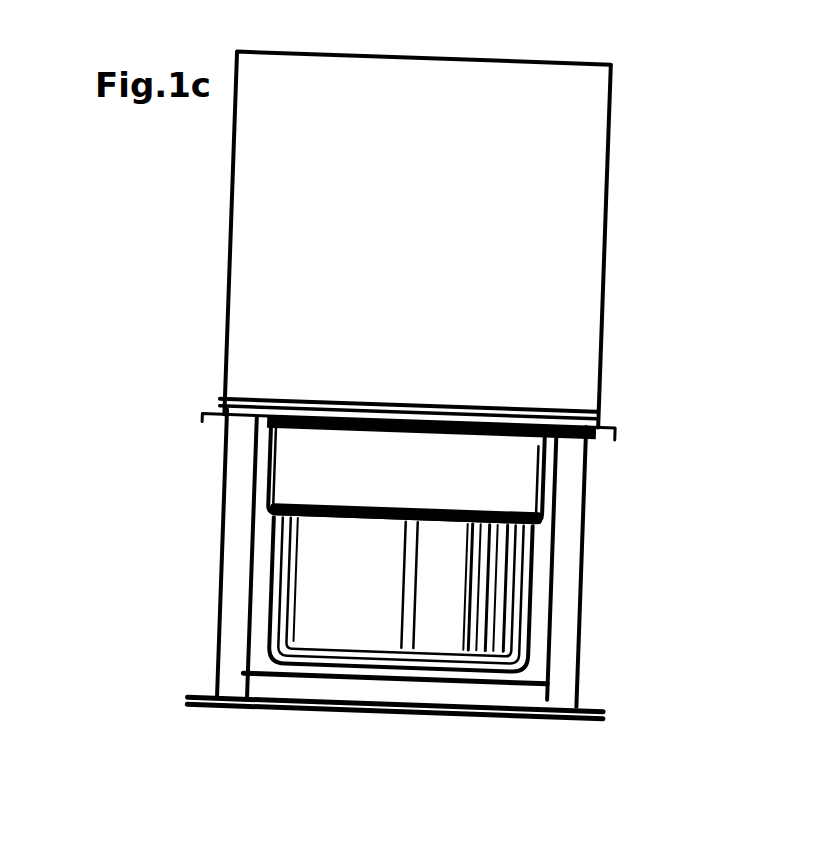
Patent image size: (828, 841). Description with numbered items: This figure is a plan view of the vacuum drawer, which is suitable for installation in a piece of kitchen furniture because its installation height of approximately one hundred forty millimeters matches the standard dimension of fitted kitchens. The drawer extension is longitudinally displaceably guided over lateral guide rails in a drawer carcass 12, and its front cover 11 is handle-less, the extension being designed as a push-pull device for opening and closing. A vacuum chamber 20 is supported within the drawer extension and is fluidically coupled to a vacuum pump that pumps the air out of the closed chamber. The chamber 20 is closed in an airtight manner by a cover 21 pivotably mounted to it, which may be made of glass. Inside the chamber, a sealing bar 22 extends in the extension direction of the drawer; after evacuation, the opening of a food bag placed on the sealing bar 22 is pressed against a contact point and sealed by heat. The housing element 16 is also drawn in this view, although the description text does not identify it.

The base plate 11 is at (479, 713).
The lid 12 is at (574, 284).
The housing 16 is at (581, 584).
The container 20 is at (329, 590).
The frame 21 is at (531, 478).
The slot structure 22 is at (508, 635).